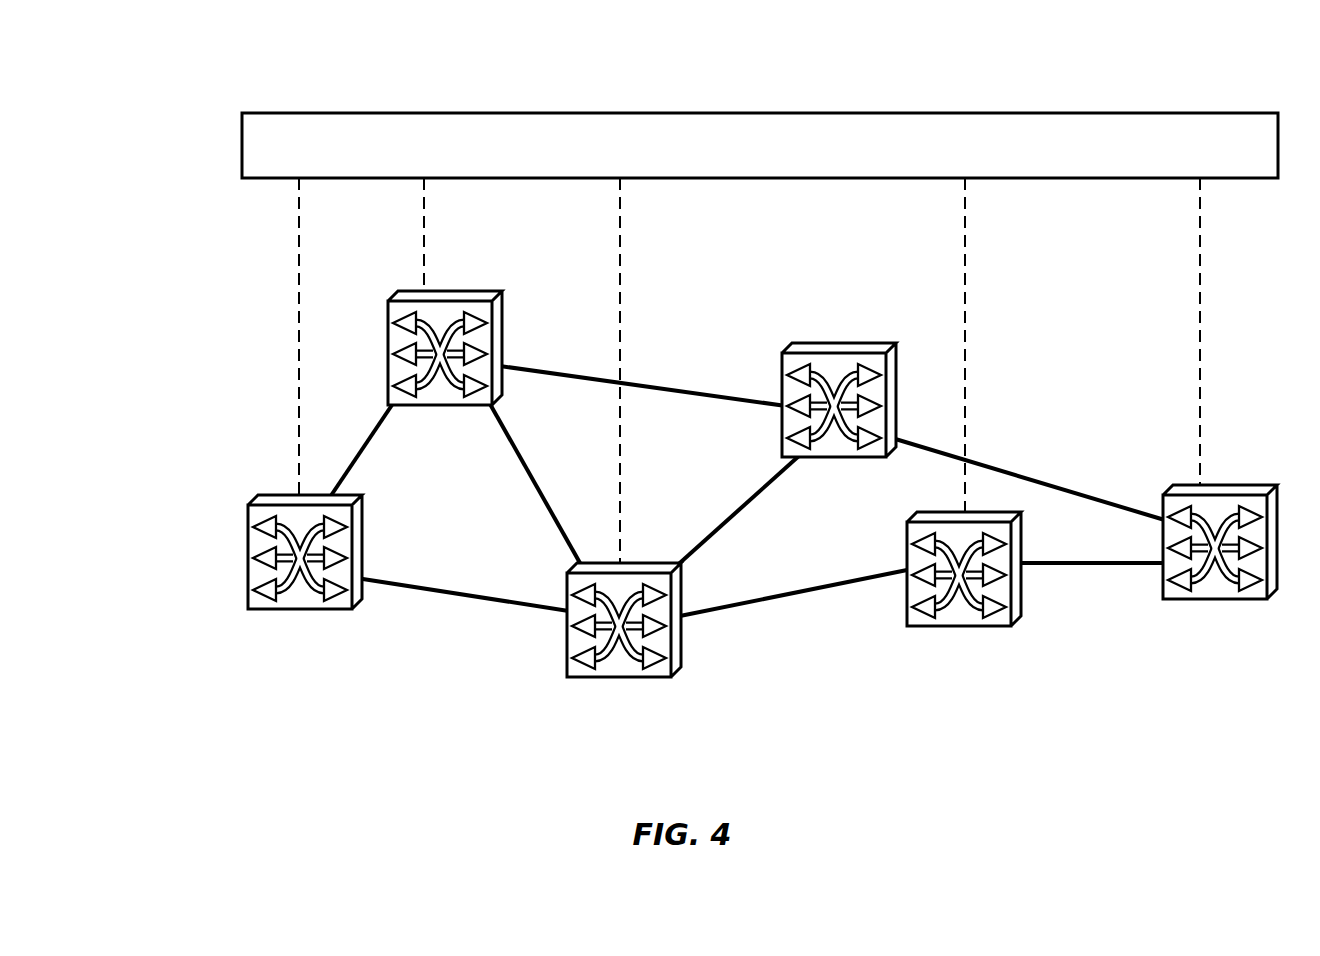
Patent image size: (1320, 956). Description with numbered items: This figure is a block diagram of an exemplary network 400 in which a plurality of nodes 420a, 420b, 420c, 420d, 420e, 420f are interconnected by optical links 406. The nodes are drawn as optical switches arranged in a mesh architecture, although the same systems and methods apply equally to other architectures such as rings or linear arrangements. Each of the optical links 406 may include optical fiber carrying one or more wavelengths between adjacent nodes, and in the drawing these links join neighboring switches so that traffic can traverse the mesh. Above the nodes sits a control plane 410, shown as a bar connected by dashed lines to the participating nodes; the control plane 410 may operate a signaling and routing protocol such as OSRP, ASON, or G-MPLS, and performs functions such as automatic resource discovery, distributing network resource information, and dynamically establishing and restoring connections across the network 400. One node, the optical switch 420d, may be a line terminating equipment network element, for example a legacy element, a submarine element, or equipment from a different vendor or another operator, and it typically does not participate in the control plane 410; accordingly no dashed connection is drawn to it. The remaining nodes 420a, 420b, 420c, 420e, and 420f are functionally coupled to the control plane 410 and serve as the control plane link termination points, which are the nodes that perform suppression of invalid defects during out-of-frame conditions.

The network 400 is at (155, 134).
The control plane 410 is at (790, 113).
The optical links 406 is at (377, 426).
The node 420a is at (287, 610).
The node 420b is at (465, 291).
The node 420c is at (604, 678).
The optical switch 420d is at (835, 343).
The node 420e is at (938, 626).
The node 420f is at (1195, 600).